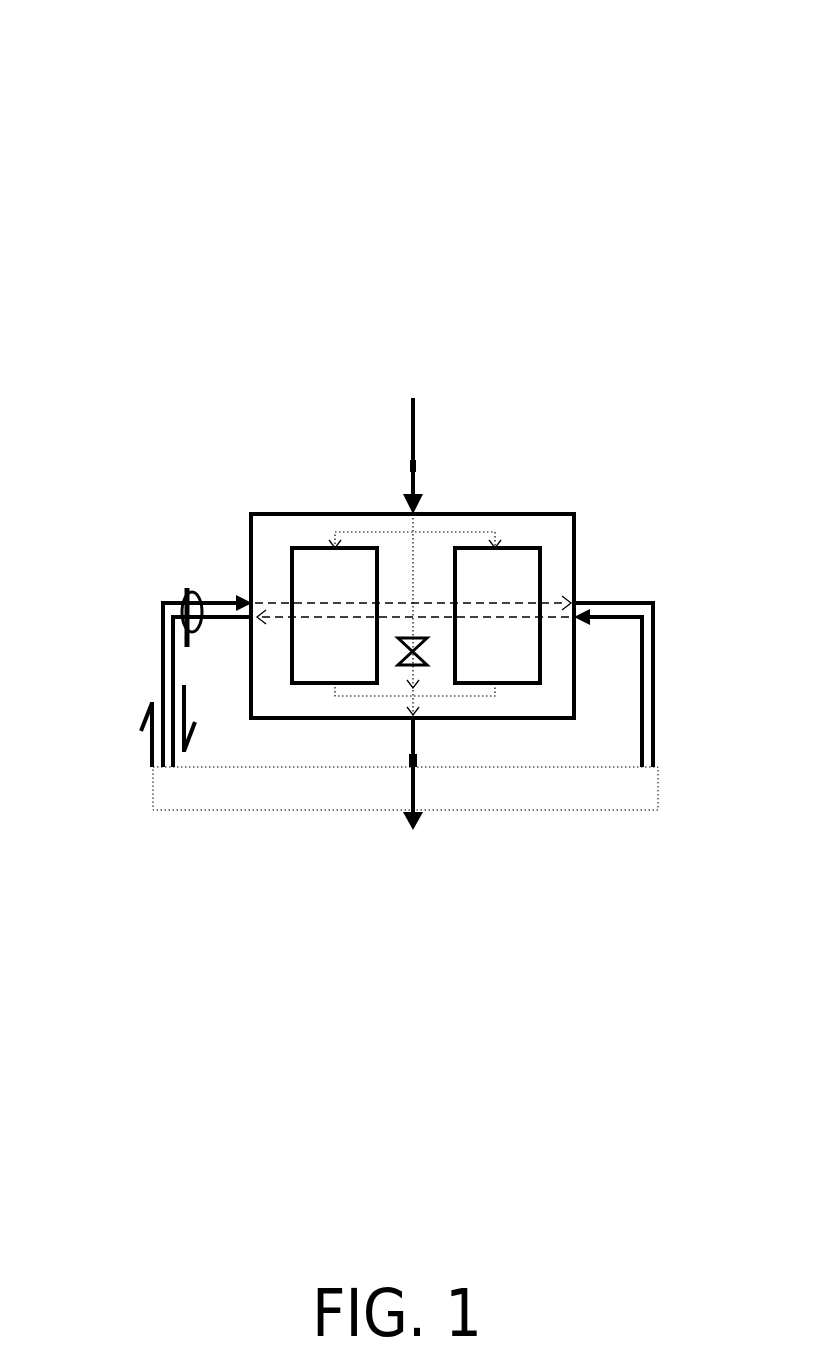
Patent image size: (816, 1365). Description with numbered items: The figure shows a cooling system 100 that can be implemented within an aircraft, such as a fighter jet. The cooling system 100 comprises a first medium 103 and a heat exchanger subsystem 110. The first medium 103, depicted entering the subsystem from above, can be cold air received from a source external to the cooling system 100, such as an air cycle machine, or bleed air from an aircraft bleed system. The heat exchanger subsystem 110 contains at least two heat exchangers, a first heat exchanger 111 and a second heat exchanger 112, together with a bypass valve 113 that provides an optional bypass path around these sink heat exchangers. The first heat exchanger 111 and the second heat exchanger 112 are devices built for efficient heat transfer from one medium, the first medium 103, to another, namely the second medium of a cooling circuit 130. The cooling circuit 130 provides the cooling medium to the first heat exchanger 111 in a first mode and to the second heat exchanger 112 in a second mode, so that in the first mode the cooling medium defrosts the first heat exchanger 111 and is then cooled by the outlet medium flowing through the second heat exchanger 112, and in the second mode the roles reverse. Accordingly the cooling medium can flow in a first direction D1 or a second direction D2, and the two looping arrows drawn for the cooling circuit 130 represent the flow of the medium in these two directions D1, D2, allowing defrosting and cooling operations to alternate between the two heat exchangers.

The cooling system 100 is at (606, 100).
The first medium 103 is at (412, 438).
The heat exchanger subsystem 110 is at (288, 512).
The first heat exchanger 111 is at (334, 615).
The second heat exchanger 112 is at (497, 615).
The bypass valve 113 is at (405, 663).
The cooling circuit 130 is at (185, 597).
The first direction D1 is at (150, 752).
The second direction D2 is at (187, 707).